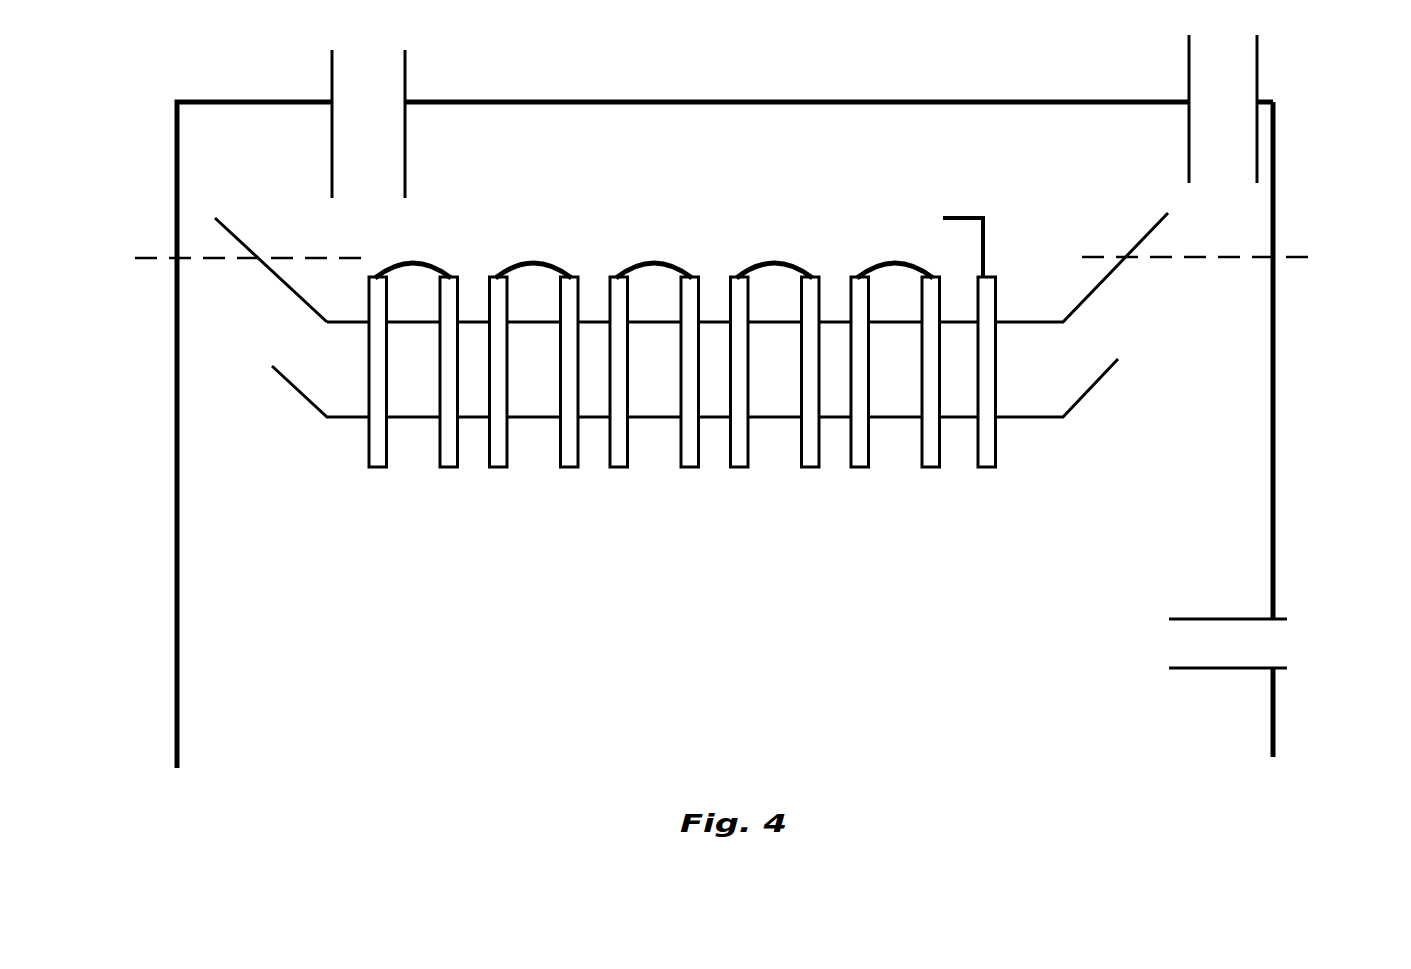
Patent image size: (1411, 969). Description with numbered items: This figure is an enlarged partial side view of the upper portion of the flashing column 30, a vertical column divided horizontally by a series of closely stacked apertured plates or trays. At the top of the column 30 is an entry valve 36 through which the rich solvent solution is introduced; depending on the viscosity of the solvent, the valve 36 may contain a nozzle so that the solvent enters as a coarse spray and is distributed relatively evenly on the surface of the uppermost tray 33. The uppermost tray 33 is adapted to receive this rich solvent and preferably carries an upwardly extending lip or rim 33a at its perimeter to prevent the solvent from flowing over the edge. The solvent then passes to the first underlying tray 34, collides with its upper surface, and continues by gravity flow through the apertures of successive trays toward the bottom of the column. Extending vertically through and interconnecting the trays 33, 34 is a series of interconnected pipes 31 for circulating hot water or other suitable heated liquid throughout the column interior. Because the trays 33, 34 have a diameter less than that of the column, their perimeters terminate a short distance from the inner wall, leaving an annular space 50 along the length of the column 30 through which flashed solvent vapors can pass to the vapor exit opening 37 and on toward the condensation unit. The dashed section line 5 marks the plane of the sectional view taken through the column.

The section line 5- 5 is at (722, 258).
The flashing column 30 is at (497, 102).
The interconnected pipes 31 is at (958, 213).
The uppermost tray 33 is at (350, 324).
The upwardly extending lip or rim 33a is at (273, 278).
The underlying tray 34 is at (350, 417).
The entry valve 36 is at (381, 161).
The vapor exit opening 37 is at (1237, 82).
The annular space 50 is at (1248, 393).